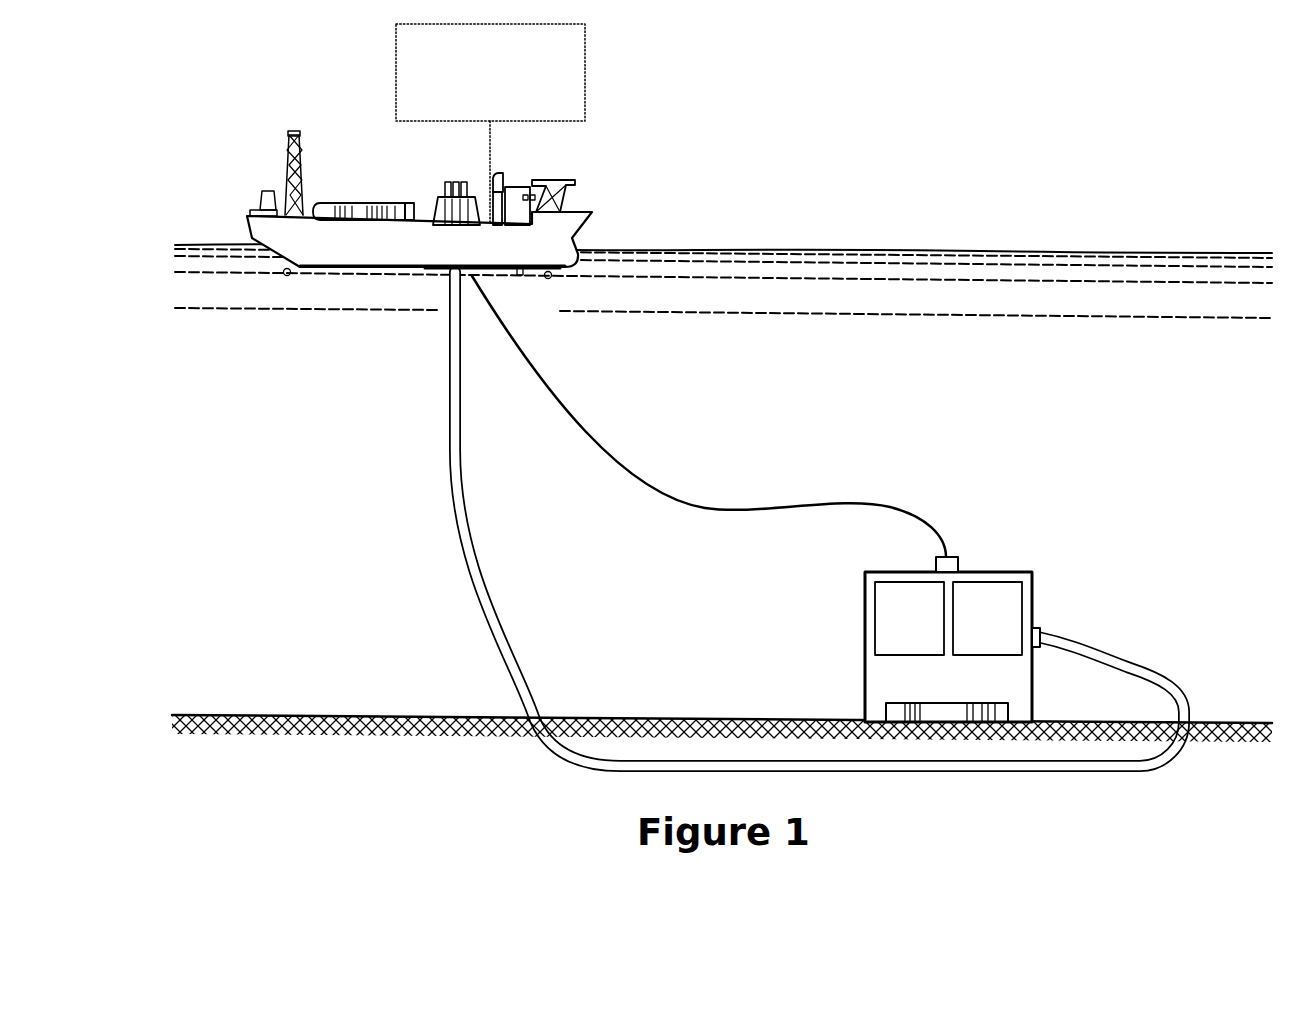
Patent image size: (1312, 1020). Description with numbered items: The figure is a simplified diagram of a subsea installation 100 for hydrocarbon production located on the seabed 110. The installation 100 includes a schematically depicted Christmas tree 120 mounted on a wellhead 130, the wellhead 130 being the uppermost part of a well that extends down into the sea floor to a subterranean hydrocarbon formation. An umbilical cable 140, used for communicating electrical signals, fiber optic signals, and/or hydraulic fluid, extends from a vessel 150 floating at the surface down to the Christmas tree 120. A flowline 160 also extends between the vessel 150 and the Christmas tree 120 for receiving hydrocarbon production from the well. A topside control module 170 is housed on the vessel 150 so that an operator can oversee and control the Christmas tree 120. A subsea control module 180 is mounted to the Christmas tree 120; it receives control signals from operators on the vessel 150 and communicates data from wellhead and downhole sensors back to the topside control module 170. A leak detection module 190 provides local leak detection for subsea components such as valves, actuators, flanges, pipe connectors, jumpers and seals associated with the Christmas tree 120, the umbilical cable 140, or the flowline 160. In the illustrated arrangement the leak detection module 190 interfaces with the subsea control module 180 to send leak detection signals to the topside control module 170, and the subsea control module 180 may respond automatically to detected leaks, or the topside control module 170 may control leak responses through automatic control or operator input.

The subsea installation 100 is at (1031, 221).
The seabed 110 is at (387, 715).
The Christmas tree 120 is at (988, 695).
The wellhead 130 is at (950, 713).
The umbilical cable 140 is at (689, 502).
The vessel 150 is at (393, 203).
The flowline 160 is at (456, 537).
The topside control module 170 is at (471, 112).
The subsea control module 180 is at (893, 642).
The leak detection module 190 is at (971, 642).